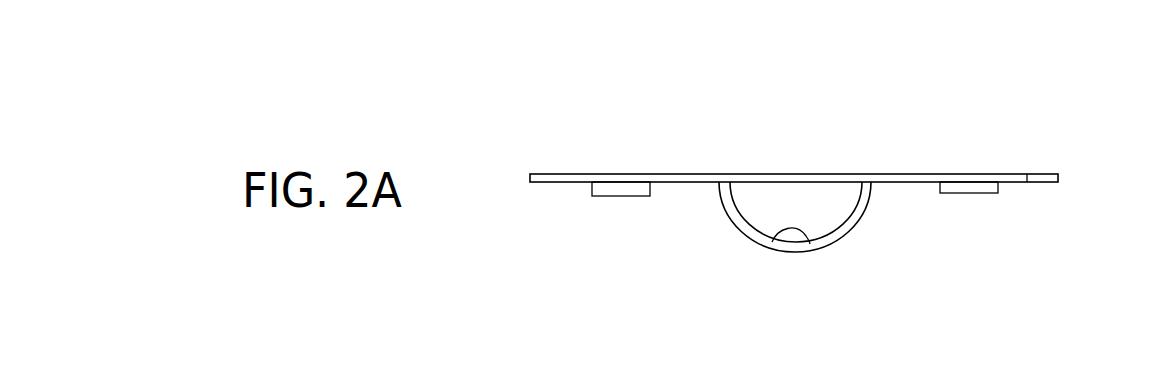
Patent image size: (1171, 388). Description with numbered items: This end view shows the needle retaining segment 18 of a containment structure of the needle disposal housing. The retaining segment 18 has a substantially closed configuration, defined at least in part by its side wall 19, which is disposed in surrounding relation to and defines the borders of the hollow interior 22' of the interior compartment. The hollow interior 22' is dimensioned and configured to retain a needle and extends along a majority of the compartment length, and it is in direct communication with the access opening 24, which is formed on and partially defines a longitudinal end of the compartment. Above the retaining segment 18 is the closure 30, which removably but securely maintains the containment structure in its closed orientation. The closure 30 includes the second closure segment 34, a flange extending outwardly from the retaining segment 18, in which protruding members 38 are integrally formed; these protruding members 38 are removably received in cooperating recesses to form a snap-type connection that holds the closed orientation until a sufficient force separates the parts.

The closure 30 is at (958, 161).
The second closure segment 34 is at (1027, 172).
The protruding member 38 is at (600, 189).
The side wall 19 is at (727, 212).
The needle retaining segment 18 is at (847, 233).
The hollow interior 22' is at (794, 211).
The access opening 24 is at (809, 242).